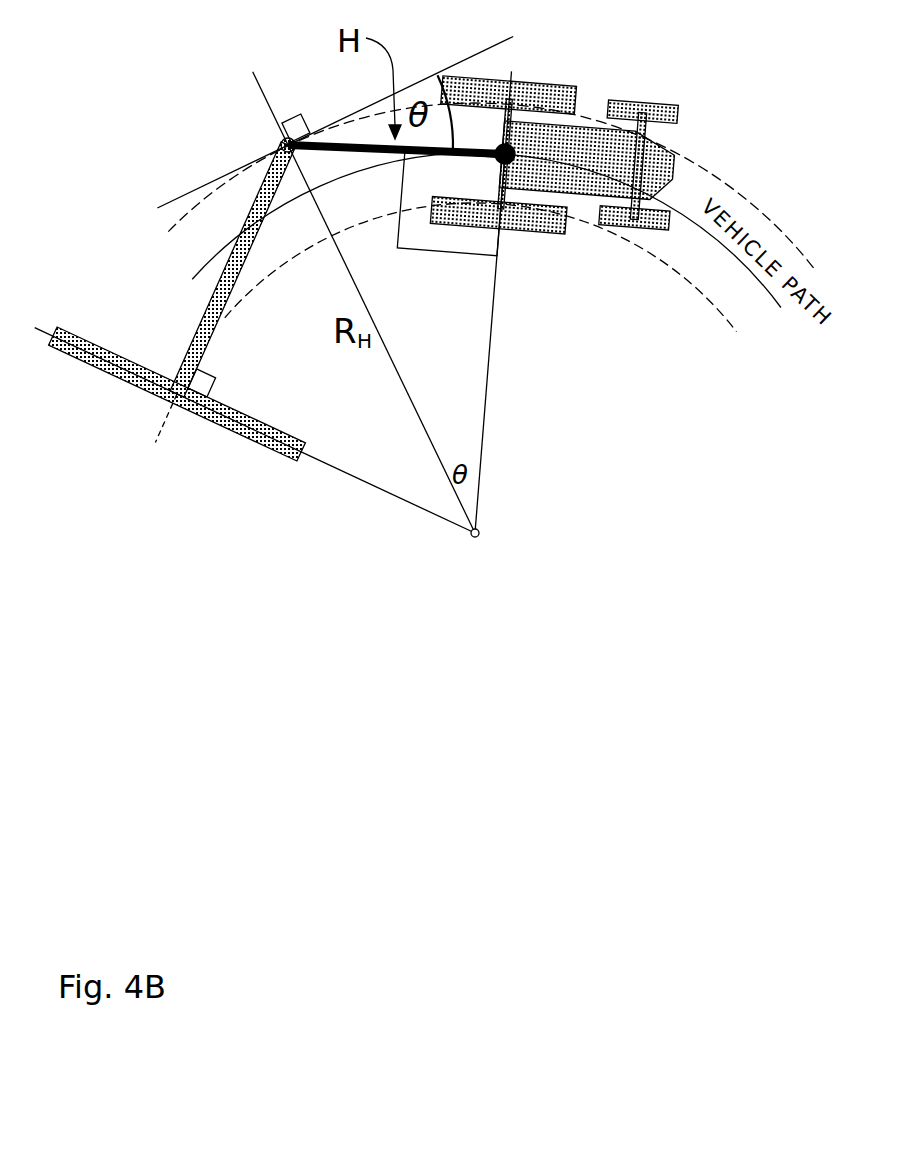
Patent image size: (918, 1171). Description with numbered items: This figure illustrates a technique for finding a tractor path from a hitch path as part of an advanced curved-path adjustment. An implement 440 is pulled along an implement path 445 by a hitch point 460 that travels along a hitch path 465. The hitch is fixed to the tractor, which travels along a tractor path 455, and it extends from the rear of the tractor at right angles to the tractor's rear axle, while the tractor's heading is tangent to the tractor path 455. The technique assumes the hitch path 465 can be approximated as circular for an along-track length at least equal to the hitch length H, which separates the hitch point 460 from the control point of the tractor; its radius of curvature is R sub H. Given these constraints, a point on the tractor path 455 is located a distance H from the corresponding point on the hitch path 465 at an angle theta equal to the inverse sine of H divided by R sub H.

The implement 440 is at (93, 375).
The implement path 445 is at (717, 313).
The tractor path 455 is at (190, 277).
The hitch point 460 is at (284, 142).
The hitch path 465 is at (817, 270).